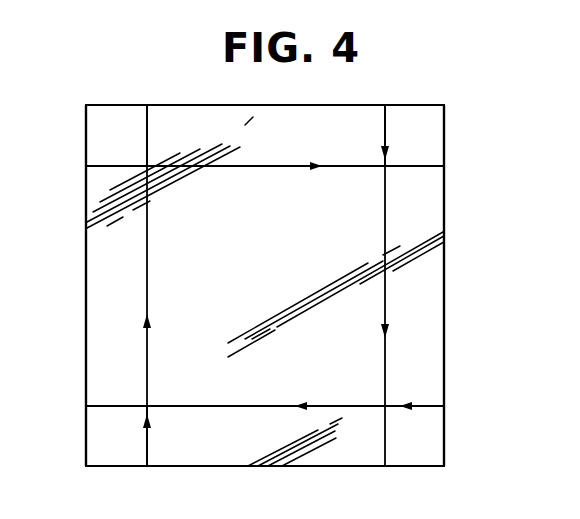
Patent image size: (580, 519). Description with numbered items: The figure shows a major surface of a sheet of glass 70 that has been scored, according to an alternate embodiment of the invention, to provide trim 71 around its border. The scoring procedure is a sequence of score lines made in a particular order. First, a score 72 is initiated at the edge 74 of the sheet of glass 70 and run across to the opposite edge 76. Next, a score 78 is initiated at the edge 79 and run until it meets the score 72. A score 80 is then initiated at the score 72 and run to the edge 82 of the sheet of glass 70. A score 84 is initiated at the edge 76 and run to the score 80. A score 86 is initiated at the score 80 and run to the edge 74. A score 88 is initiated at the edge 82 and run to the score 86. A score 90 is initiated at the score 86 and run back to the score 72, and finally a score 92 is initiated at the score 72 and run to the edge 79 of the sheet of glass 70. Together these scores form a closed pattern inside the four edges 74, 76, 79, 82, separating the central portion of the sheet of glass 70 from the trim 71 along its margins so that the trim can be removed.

The sheet of glass 70 is at (405, 80).
The trim 71 is at (108, 117).
The score 72 is at (158, 165).
The edge 74 is at (86, 133).
The edge 76 is at (444, 183).
The score 78 is at (386, 130).
The edge 79 is at (281, 105).
The score 80 is at (385, 288).
The edge 82 is at (358, 466).
The score 84 is at (423, 406).
The score 86 is at (182, 407).
The score 88 is at (146, 447).
The score 90 is at (146, 276).
The score 92 is at (147, 135).